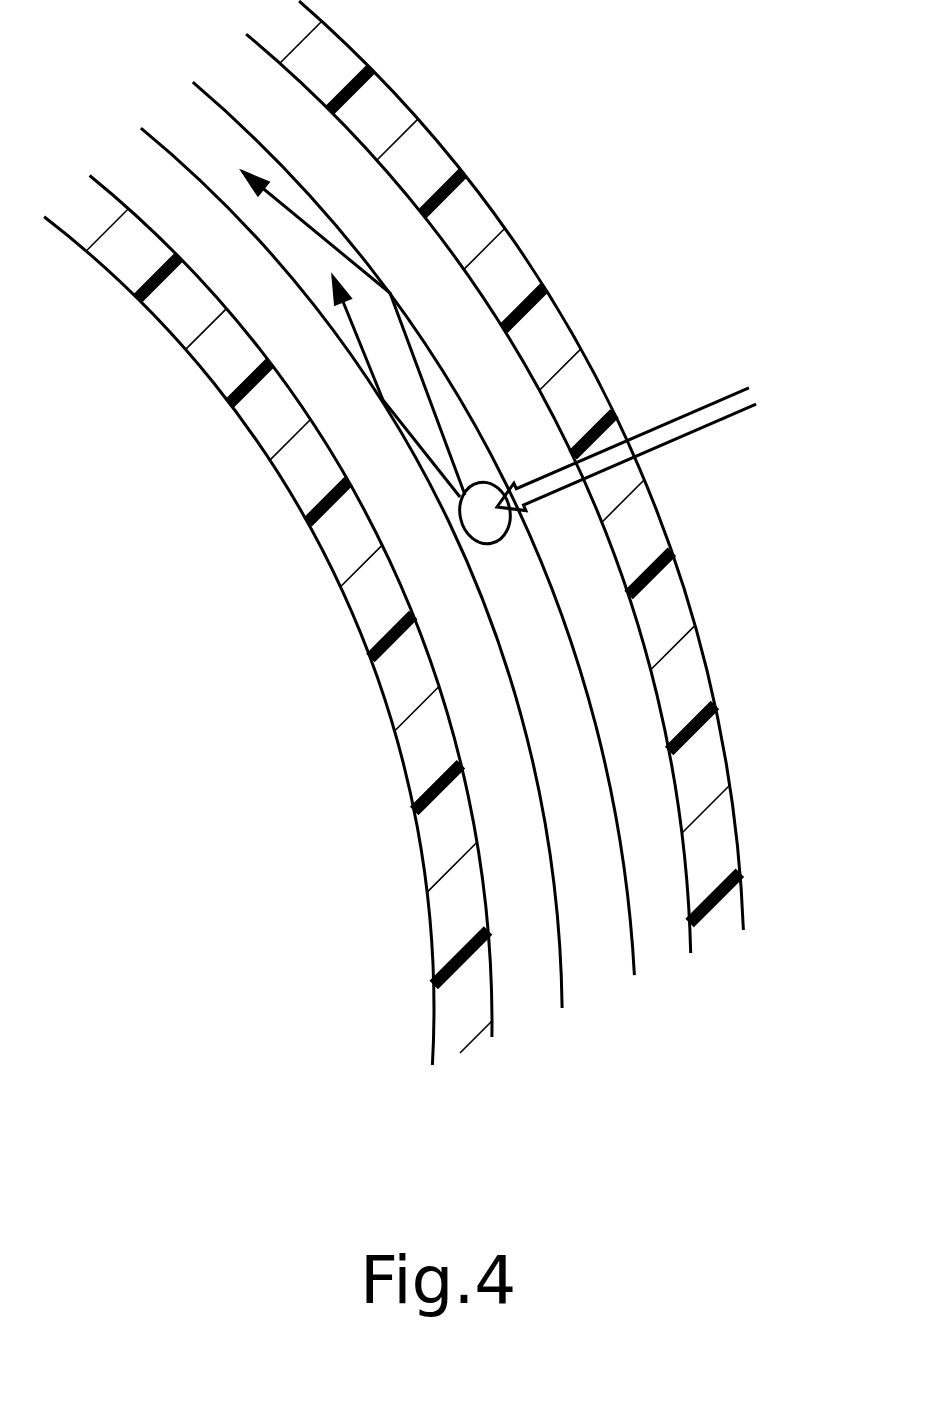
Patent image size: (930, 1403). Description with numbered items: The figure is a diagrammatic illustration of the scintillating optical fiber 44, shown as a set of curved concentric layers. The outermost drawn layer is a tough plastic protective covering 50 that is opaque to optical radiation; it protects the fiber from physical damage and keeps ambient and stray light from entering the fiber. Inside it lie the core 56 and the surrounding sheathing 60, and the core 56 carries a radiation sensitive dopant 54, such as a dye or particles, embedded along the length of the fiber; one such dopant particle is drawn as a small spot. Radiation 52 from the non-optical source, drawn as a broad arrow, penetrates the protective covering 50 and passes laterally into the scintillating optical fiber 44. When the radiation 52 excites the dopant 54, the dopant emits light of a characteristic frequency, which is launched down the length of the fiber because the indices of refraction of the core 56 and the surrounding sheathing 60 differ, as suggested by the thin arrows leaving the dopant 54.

The scintillating optical fiber 44 is at (583, 833).
The protective covering 50 is at (425, 735).
The radiation 52 is at (690, 418).
The radiation sensitive dopant 54 is at (482, 513).
The core 56 is at (433, 392).
The sheathing 60 is at (588, 582).